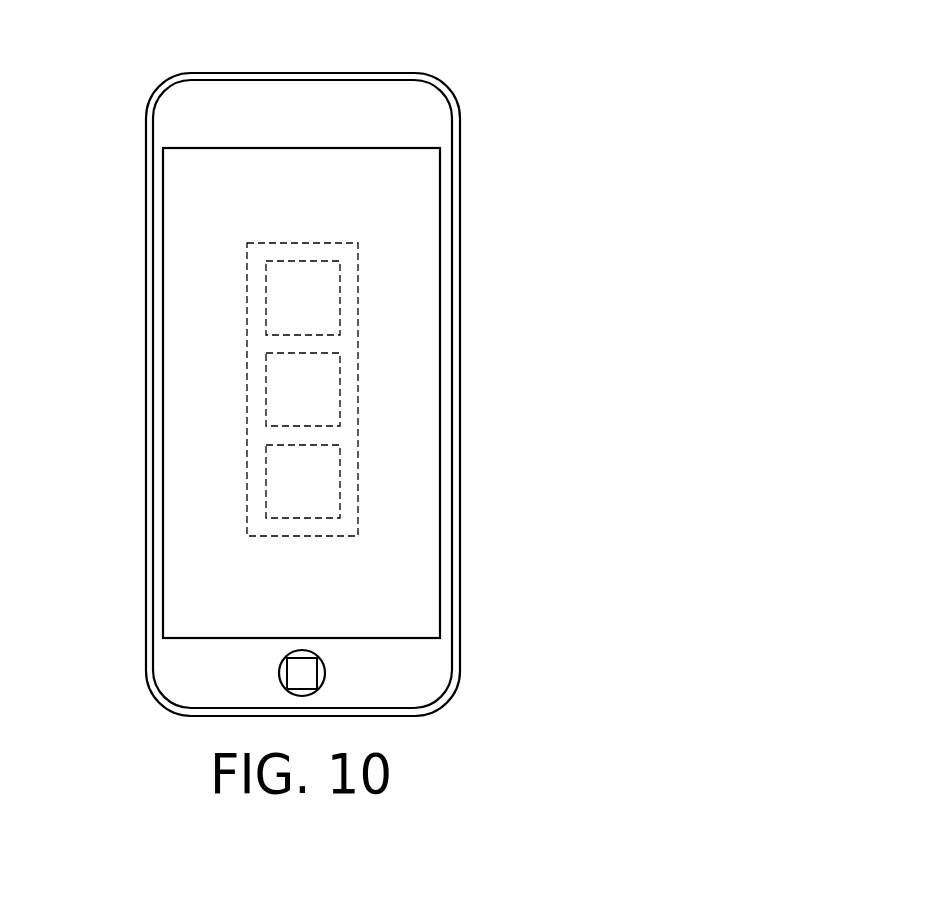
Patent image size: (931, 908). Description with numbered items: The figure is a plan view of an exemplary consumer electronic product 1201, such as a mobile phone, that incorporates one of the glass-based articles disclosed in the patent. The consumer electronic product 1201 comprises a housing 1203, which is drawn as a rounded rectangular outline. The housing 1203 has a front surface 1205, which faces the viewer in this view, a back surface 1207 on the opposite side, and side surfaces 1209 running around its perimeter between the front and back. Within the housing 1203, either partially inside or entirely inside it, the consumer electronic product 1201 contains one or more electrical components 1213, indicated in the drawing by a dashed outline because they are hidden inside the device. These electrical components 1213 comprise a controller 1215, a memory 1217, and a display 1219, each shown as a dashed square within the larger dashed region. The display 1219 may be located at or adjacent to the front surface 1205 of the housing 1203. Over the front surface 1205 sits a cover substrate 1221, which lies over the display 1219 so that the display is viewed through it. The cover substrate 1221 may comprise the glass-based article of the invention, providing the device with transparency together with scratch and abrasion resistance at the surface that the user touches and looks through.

The consumer electronic product 1201 is at (545, 95).
The housing 1203 is at (191, 118).
The front surface 1205 is at (434, 671).
The back surface 1207 is at (200, 497).
The side surfaces 1209 is at (472, 443).
The electrical components 1213 is at (200, 314).
The controller 1215 is at (302, 261).
The memory 1217 is at (340, 390).
The display 1219 is at (300, 519).
The cover substrate 1221 is at (417, 234).